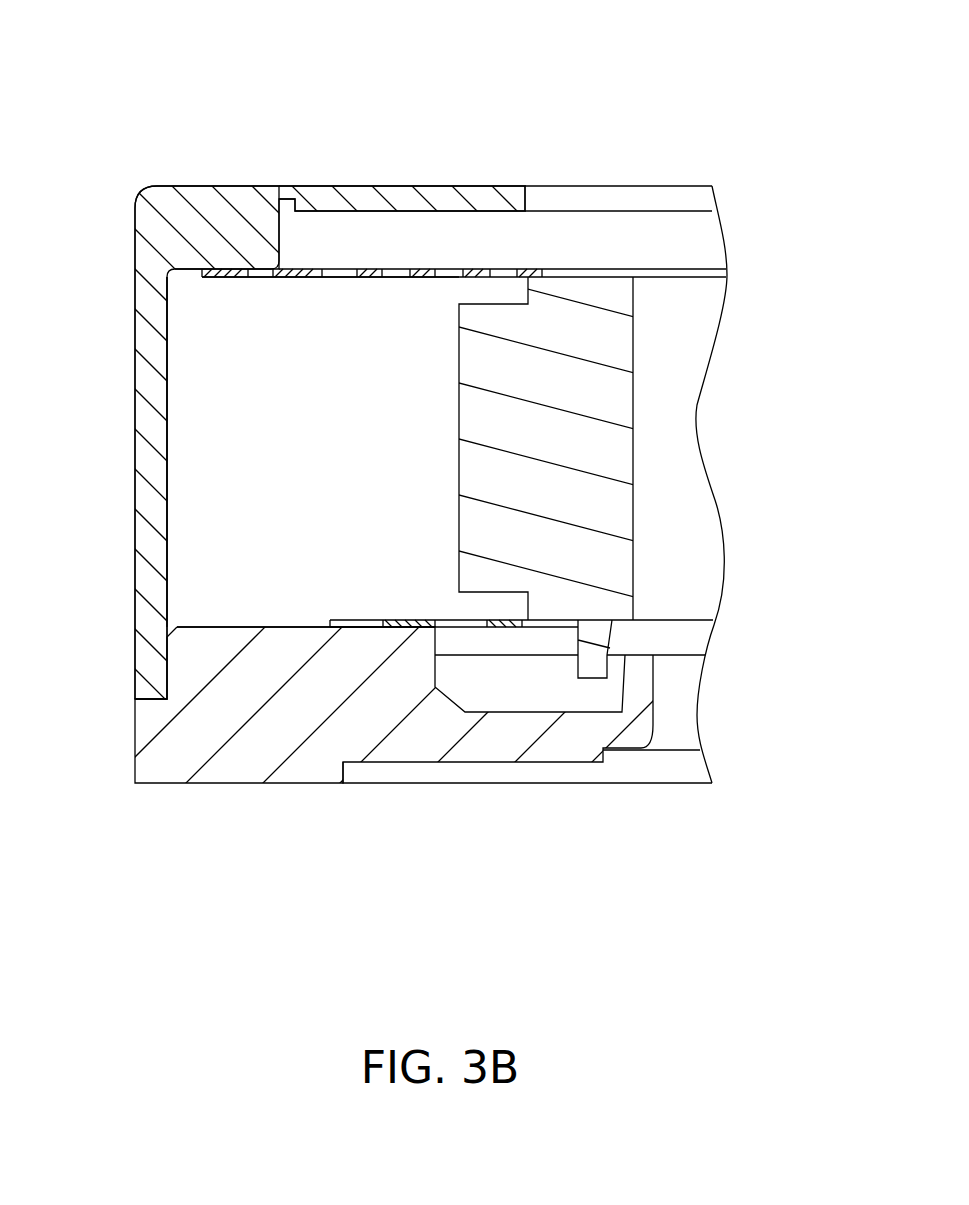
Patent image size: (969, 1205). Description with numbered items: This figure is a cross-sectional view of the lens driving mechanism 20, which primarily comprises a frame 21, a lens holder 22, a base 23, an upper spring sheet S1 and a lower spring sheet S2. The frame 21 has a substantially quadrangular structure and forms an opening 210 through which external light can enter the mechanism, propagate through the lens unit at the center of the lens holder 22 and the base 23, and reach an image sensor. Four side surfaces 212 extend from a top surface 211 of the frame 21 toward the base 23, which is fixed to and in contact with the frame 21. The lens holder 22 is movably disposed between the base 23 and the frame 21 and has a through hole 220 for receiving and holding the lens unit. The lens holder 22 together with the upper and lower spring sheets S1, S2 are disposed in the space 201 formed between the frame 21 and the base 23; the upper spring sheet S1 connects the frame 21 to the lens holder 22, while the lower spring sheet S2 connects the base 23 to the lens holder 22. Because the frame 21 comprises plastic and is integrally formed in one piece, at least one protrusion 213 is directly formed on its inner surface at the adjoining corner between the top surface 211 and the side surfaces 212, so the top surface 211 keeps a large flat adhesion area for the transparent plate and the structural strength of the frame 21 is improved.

The lens driving mechanism 20 is at (57, 65).
The frame 21 is at (130, 180).
The space 201 is at (207, 397).
The opening 210 is at (641, 200).
The top surface 211 is at (470, 210).
The side surfaces 212 is at (138, 468).
The protrusion 213 is at (250, 242).
The lens holder 22 is at (605, 397).
The through hole 220 is at (670, 467).
The base 23 is at (252, 745).
The upper spring sheet S1 is at (217, 270).
The lower spring sheet S2 is at (410, 627).